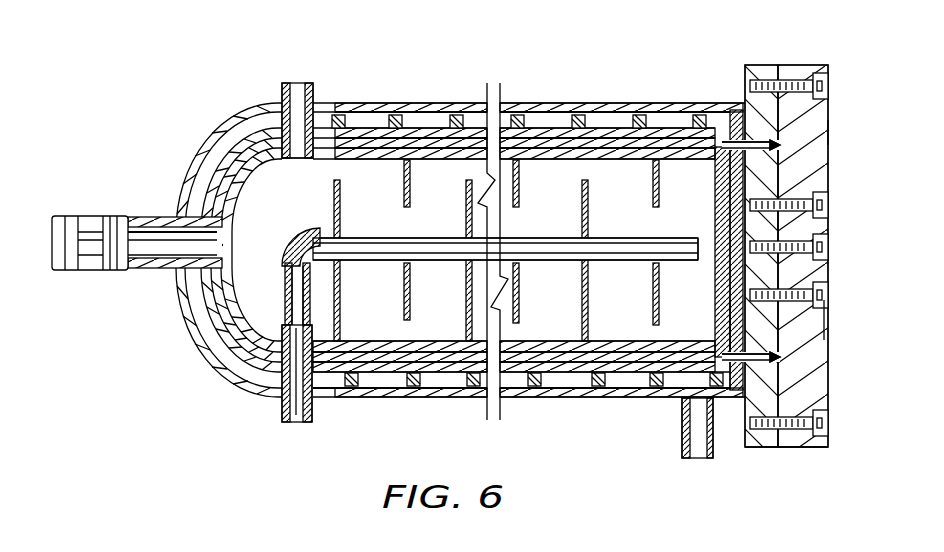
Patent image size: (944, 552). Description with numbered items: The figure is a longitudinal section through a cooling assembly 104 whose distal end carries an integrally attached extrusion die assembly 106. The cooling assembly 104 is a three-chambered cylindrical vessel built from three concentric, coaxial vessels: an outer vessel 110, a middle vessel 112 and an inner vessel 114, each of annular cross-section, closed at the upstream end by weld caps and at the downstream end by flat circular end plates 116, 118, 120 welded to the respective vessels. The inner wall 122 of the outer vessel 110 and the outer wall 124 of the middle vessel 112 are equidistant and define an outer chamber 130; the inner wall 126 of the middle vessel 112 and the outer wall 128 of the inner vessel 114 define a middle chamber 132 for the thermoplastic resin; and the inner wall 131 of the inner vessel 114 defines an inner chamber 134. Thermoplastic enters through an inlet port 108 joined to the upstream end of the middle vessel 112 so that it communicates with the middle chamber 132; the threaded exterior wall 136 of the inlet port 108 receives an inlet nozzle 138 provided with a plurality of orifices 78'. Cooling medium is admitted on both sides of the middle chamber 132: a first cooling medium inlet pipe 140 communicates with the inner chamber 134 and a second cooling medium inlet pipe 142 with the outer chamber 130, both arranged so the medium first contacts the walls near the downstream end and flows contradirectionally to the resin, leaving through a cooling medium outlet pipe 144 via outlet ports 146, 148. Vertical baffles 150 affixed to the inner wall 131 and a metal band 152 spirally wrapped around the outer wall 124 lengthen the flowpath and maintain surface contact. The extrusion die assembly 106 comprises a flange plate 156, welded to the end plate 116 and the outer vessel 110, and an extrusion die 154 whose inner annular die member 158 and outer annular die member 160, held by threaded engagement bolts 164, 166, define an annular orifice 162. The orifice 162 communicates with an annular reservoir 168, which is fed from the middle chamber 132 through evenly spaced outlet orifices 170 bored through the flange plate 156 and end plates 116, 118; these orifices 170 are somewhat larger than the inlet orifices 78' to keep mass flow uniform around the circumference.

The cooling assembly 104 is at (531, 74).
The extrusion die assembly 106 is at (790, 53).
The inlet port 108 is at (150, 211).
The outer vessel 110 is at (441, 107).
The middle vessel 112 is at (412, 129).
The inner vessel 114 is at (355, 157).
The end plate 116 is at (729, 110).
The end plate 118 is at (718, 288).
The end plate 120 is at (722, 316).
The inner wall of outer vessel 122 is at (550, 116).
The outer wall of middle vessel 124 is at (556, 128).
The inner wall of middle vessel 126 is at (594, 140).
The outer wall of inner vessel 128 is at (661, 126).
The outer chamber 130 is at (337, 381).
The inner wall of inner vessel 131 is at (472, 112).
The middle chamber 132 is at (412, 356).
The inner chamber 134 is at (450, 323).
The exterior wall of inlet port 136 is at (145, 269).
The inlet nozzle 138 is at (73, 228).
The first cooling medium inlet pipe 140 is at (293, 407).
The second cooling medium inlet pipe 142 is at (698, 442).
The cooling medium outlet pipe 144 is at (279, 82).
The cooling medium outlet port 146 is at (279, 117).
The cooling medium outlet port 148 is at (290, 160).
The vertical baffles 150 is at (581, 303).
The metal band 152 is at (698, 116).
The extrusion die 154 is at (829, 132).
The flange plate 156 is at (750, 453).
The inner annular die member 158 is at (808, 326).
The outer annular die member 160 is at (779, 448).
The annular orifice 162 is at (781, 154).
The threaded engagement bolts 164 is at (802, 82).
The threaded engagement bolts 166 is at (829, 209).
The annular reservoir 168 is at (784, 153).
The outlet orifices 170 is at (779, 146).
The orifices 78' is at (457, 269).